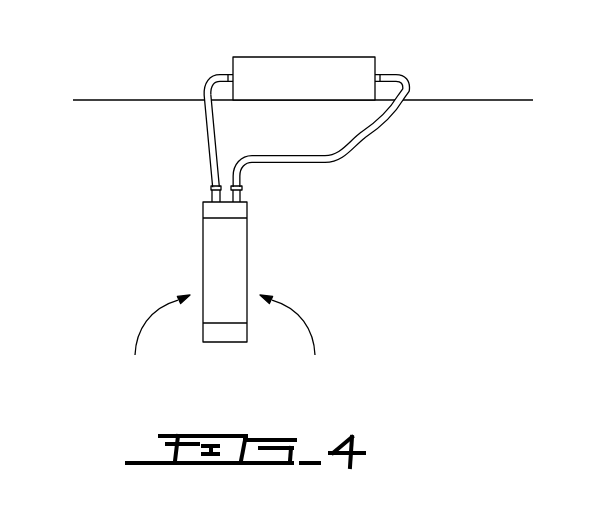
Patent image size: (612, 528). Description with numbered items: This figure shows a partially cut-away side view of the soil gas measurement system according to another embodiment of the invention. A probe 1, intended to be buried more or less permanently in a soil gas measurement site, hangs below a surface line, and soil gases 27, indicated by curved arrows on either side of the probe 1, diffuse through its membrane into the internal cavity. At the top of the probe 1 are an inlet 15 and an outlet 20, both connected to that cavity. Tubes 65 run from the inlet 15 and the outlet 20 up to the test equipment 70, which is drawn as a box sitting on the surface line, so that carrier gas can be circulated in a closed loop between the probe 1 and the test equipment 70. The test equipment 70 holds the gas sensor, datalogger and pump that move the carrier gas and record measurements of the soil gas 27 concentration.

The probe 1 is at (237, 247).
The inlet 15 is at (212, 198).
The outlet 20 is at (242, 195).
The soil gases 27 is at (223, 339).
The tubes 65 is at (207, 125).
The test equipment 70 is at (304, 78).